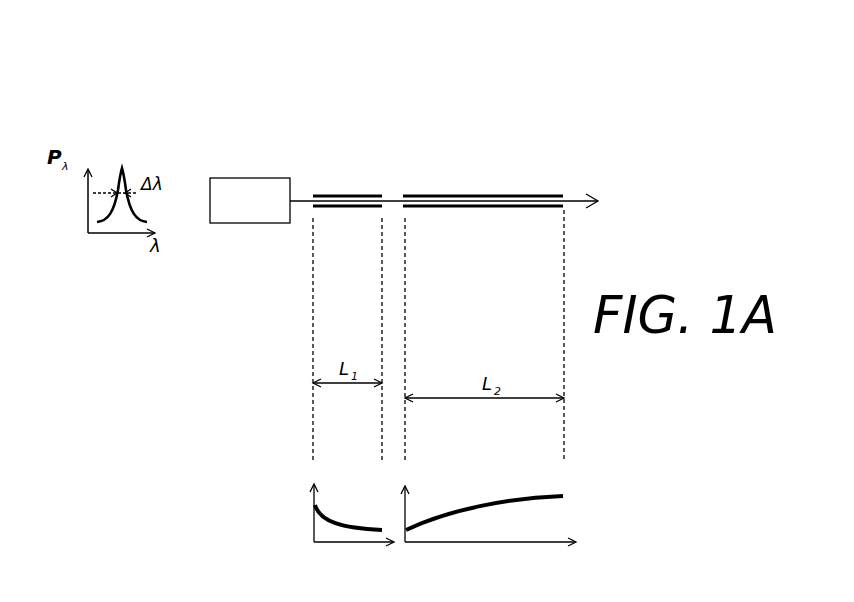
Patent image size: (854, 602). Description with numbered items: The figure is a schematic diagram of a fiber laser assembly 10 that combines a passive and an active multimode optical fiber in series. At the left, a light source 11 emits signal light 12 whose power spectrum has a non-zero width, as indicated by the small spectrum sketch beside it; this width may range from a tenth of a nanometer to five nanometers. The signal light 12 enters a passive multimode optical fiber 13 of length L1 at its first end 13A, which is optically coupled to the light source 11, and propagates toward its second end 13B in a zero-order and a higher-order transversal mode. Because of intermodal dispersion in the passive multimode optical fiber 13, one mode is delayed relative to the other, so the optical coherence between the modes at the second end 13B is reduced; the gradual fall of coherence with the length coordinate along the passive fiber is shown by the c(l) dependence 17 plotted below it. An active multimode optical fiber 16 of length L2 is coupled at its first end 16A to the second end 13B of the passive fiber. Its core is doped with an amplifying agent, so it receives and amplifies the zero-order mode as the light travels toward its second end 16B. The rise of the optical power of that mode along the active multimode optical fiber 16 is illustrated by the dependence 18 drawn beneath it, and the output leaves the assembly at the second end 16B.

The fiber laser assembly 10 is at (427, 33).
The light source 11 is at (263, 216).
The signal light 12 is at (303, 200).
The passive multimode optical fiber 13 is at (343, 194).
The first end of passive multimode optical fiber 13A is at (313, 207).
The second end of passive multimode optical fiber 13B is at (382, 196).
The active multimode optical fiber 16 is at (475, 195).
The first end of active multimode optical fiber 16A is at (403, 207).
The second end of active multimode optical fiber 16B is at (562, 196).
The c(l) dependence 17 is at (283, 521).
The dependence of optical power P on length coordinate l 18 is at (603, 519).